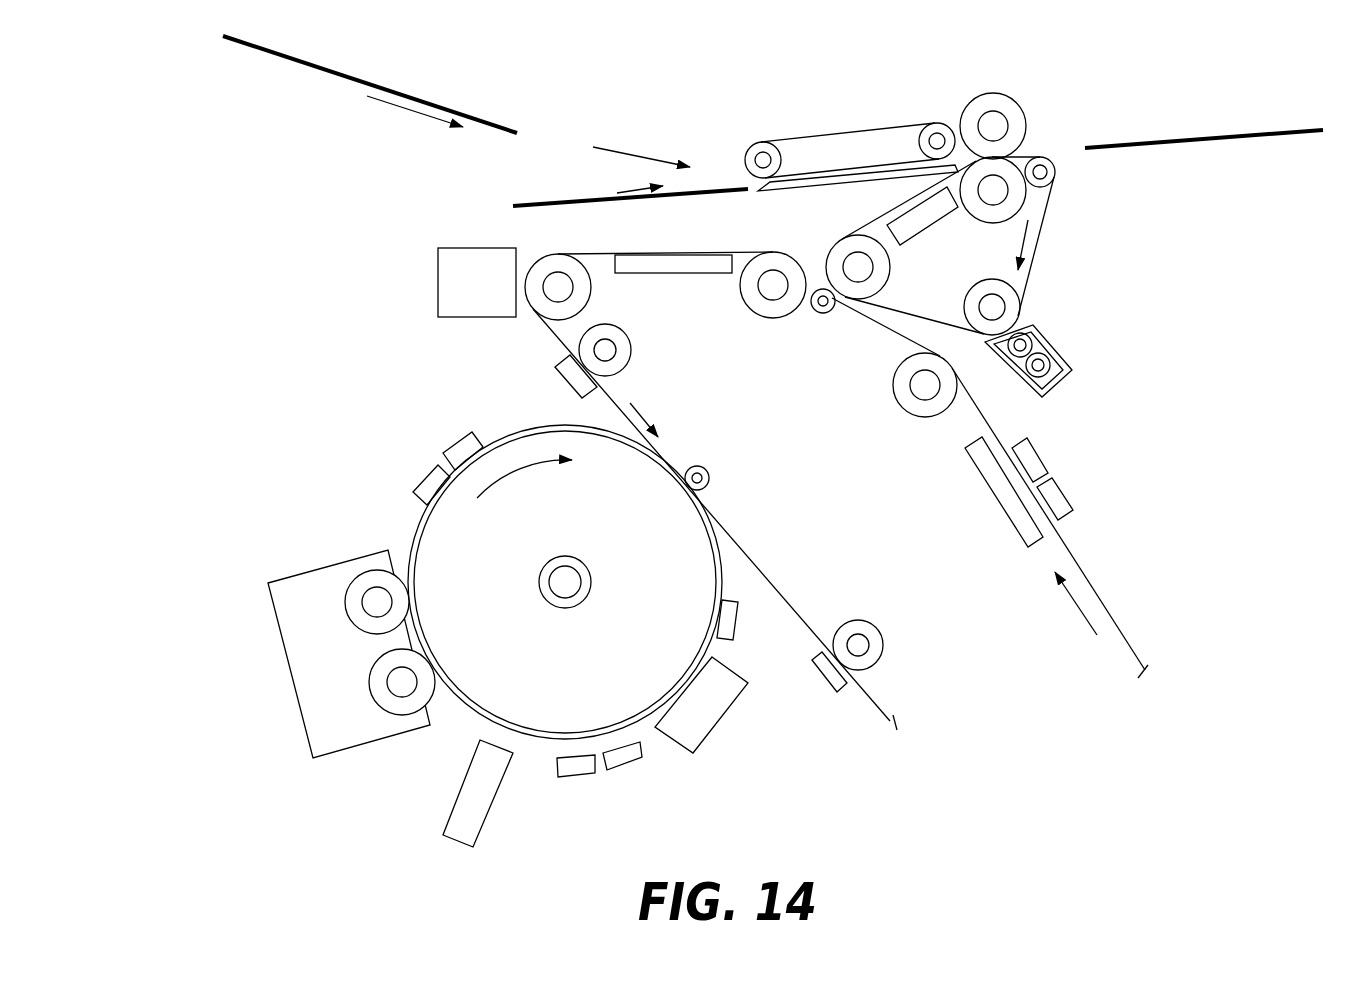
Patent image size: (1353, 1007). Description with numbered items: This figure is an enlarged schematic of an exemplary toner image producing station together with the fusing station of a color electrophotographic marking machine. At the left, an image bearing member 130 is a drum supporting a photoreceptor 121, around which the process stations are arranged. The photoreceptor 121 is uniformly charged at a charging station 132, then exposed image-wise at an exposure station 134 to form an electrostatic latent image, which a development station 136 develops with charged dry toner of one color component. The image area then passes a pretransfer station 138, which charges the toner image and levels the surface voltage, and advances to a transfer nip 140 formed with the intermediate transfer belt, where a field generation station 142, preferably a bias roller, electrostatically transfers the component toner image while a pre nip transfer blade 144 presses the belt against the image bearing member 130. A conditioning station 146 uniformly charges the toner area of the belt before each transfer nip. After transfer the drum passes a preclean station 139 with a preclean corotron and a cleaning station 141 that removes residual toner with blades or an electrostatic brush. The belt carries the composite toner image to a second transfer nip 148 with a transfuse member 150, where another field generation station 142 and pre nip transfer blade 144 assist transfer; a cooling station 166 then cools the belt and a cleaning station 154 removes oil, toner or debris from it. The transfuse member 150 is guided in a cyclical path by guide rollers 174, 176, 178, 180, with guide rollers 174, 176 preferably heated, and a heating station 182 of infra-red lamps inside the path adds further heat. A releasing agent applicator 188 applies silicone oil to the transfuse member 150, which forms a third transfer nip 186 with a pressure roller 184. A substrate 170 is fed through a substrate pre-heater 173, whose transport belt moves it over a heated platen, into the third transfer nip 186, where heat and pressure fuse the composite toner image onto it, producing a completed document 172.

The photoreceptor 121 is at (445, 698).
The image bearing member 130 is at (728, 557).
The charging station 132 is at (605, 775).
The exposure station 134 is at (493, 797).
The development station 136 is at (325, 577).
The pretransfer station 138 is at (433, 455).
The preclean station 139 is at (730, 625).
The transfer nip 140 is at (710, 498).
The cleaning station 141 is at (710, 720).
The field generation station 142 is at (820, 313).
The pre nip transfer blade 144 is at (848, 308).
The conditioning station 146 is at (572, 382).
The second transfer nip 148 is at (822, 270).
The transfuse member 150 is at (1047, 225).
The cleaning station 154 is at (472, 240).
The cooling station 166 is at (663, 270).
The substrate 170 is at (480, 123).
The completed document 172 is at (1277, 130).
The substrate pre-heater 173 is at (800, 120).
The guide roller 174 is at (842, 247).
The guide roller 176 is at (978, 212).
The guide roller 178 is at (1050, 177).
The guide roller 180 is at (977, 297).
The heating station 182 is at (933, 207).
The pressure roller 184 is at (987, 98).
The third transfer nip 186 is at (1030, 143).
The releasing agent applicator 188 is at (1072, 369).